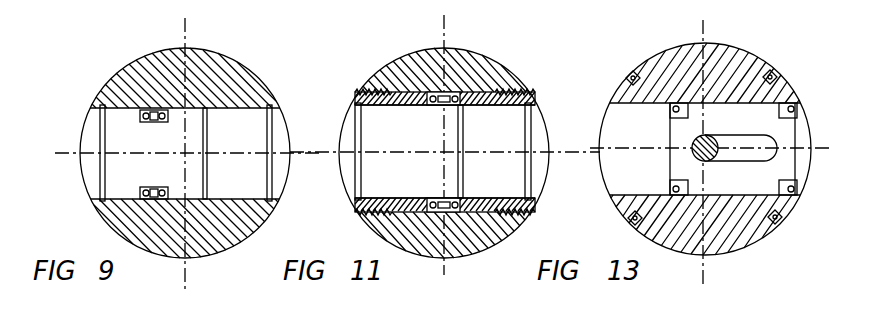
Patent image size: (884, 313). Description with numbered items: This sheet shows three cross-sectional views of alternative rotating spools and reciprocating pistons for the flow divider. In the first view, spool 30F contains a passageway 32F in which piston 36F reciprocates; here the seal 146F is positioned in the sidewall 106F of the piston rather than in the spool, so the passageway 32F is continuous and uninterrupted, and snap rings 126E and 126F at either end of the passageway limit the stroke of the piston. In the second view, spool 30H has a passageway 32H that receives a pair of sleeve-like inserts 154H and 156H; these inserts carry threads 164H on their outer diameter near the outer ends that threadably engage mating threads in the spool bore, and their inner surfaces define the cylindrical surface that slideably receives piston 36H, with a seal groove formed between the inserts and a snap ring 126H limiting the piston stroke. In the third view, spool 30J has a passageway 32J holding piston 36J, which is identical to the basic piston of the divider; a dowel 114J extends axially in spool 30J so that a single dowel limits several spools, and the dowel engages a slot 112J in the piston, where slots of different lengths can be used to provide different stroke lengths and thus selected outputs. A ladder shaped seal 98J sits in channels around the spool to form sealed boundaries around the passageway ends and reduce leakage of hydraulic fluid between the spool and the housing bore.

In FIG. 9, the spool 30F is at (258, 60).
In FIG. 9, the passageway 32F is at (90, 138).
In FIG. 9, the piston 36F is at (232, 141).
In FIG. 9, the sidewall of piston 106F is at (144, 180).
In FIG. 9, the snap ring 126E is at (100, 175).
In FIG. 9, the snap ring 126F is at (265, 183).
In FIG. 9, the seal 146F is at (147, 110).
In FIG. 11, the spool 30H is at (543, 63).
In FIG. 11, the passageway 32H is at (493, 130).
In FIG. 11, the piston 36H is at (478, 180).
In FIG. 11, the snap ring 126H is at (533, 172).
In FIG. 11, the sleeve-like insert 154H is at (466, 62).
In FIG. 11, the sleeve-like insert 156H is at (411, 92).
In FIG. 11, the threads 164H is at (522, 92).
In FIG. 13, the spool 30J is at (803, 57).
In FIG. 13, the passageway 32J is at (642, 137).
In FIG. 13, the piston 36J is at (810, 126).
In FIG. 13, the ladder shaped seal 98J is at (782, 220).
In FIG. 13, the slot 112J is at (731, 156).
In FIG. 13, the dowel 114J is at (708, 136).